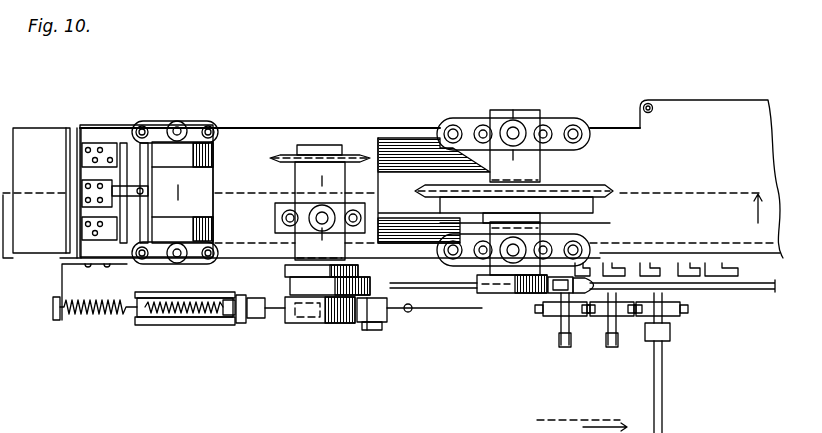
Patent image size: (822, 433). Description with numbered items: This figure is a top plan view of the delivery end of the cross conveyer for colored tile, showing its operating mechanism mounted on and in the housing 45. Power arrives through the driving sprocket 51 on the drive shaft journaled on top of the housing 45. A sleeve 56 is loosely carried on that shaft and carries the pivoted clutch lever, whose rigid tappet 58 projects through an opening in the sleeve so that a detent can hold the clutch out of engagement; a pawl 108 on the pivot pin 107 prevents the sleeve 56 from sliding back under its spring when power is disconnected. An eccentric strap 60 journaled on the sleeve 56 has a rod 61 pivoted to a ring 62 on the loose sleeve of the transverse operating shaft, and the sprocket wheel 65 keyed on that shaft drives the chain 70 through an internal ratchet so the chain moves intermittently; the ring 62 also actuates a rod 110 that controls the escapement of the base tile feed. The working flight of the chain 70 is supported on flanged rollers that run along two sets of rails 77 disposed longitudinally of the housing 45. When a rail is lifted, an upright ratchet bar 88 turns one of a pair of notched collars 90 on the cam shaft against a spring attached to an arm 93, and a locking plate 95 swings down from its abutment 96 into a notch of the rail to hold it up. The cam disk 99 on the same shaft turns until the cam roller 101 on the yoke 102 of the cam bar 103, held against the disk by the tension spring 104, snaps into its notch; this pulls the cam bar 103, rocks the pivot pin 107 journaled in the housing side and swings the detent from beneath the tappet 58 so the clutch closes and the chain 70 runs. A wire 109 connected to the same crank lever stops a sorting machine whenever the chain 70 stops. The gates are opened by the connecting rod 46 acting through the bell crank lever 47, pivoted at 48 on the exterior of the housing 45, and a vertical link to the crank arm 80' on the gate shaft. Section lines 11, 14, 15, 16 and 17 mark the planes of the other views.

The section line 11 is at (385, 259).
The section line 14 is at (516, 112).
The section line 15 is at (178, 118).
The section line 16 is at (327, 125).
The section line 17 is at (647, 98).
The housing 45 is at (686, 179).
The connecting rod 46 is at (663, 403).
The bell crank lever 47 is at (665, 326).
The pivot 48 is at (682, 308).
The driving sprocket 51 is at (280, 156).
The sleeve 56 is at (285, 271).
The tappet 58 is at (369, 331).
The eccentric strap 60 is at (291, 287).
The eccentric rod 61 is at (437, 285).
The ring 62 is at (498, 294).
The sprocket wheel 65 is at (602, 183).
The chain 70 is at (590, 410).
The rails 77 is at (387, 163).
The crank arm 80' is at (656, 247).
The ratchet bar 88 is at (214, 228).
The notched collars 90 is at (165, 128).
The arm 93 is at (160, 188).
The locking plate 95 is at (85, 168).
The abutment 96 is at (128, 143).
The cam disk 99 is at (187, 315).
The cam roller 101 is at (229, 316).
The yoke 102 is at (157, 324).
The cam bar 103 is at (278, 312).
The tension spring 104 is at (87, 315).
The pivot pin 107 is at (382, 330).
The pawl 108 is at (355, 324).
The wire 109 is at (453, 310).
The rod 110 is at (770, 292).